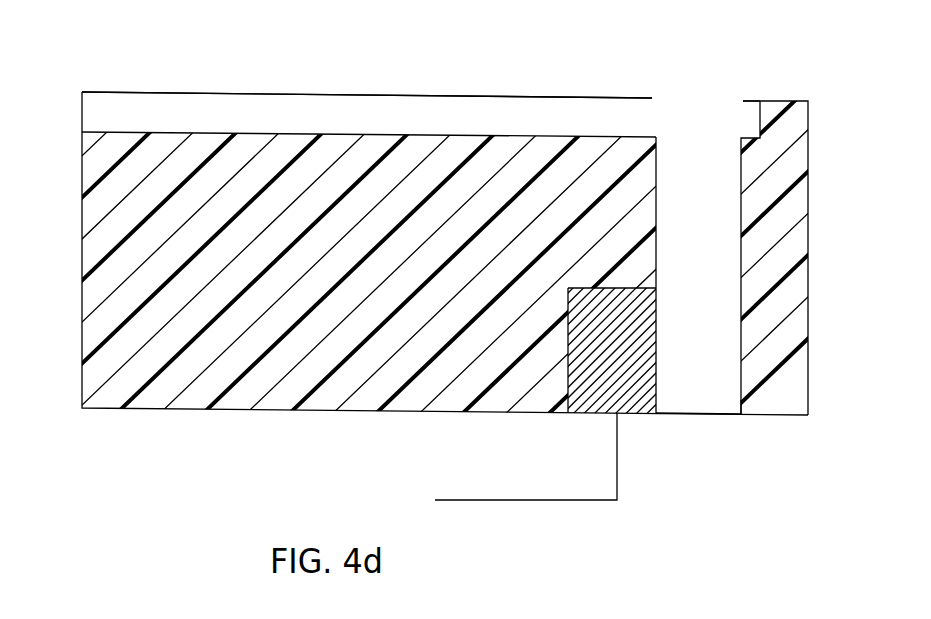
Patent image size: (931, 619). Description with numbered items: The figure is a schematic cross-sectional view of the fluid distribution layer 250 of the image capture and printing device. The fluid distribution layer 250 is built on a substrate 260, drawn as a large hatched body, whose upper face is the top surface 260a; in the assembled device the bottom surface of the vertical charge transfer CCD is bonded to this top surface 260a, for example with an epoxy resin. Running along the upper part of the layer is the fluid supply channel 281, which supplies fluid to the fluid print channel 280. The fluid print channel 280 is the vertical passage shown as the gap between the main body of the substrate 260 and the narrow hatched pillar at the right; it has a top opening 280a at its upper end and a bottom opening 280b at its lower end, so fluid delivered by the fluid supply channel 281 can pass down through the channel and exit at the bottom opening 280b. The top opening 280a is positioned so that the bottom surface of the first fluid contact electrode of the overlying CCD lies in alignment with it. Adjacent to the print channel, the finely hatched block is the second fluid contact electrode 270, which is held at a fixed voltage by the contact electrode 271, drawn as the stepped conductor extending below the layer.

The fluid distribution layer 250 is at (265, 430).
The substrate 260 is at (800, 174).
The top surface 260a is at (335, 93).
The second fluid contact electrode 270 is at (633, 395).
The contact electrode 271 is at (557, 502).
The fluid print channel 280 is at (695, 378).
The top opening 280a is at (708, 98).
The bottom opening 280b is at (730, 415).
The fluid supply channel 281 is at (492, 115).